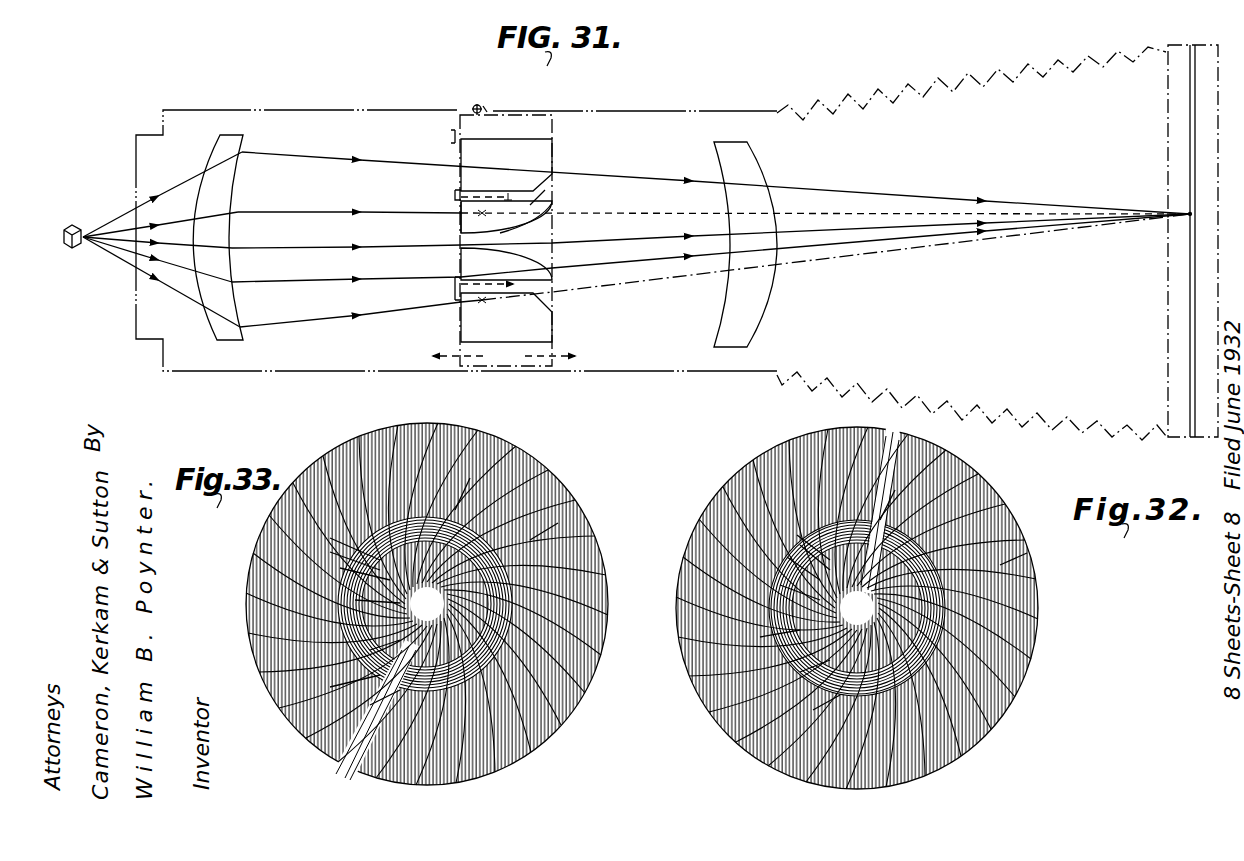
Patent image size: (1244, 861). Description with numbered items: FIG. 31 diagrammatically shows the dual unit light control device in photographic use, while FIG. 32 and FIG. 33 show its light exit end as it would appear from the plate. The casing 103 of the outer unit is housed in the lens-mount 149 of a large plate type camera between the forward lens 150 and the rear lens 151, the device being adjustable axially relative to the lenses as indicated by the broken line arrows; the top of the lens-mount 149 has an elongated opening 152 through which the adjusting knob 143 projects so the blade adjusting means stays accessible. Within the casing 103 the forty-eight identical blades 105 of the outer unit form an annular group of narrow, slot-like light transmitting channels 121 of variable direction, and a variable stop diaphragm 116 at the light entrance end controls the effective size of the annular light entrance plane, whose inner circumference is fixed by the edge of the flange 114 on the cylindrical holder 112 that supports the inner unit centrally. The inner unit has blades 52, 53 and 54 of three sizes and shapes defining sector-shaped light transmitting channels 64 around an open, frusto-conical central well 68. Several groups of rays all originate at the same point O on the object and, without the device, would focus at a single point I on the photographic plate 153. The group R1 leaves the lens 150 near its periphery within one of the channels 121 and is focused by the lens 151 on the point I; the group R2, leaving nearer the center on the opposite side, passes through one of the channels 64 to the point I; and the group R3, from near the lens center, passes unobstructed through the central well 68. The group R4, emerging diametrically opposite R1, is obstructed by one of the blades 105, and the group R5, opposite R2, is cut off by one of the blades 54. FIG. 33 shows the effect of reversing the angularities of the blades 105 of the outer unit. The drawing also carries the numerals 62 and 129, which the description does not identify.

In FIG. 31, the lens-mount 149 is at (288, 102).
In FIG. 31, the forward lens 150 is at (222, 149).
In FIG. 31, the rear lens 151 is at (747, 163).
In FIG. 31, the photographic plate 153 is at (1190, 135).
In FIG. 31, the adjusting knob 143 is at (477, 103).
In FIG. 31, the elongated opening 152 is at (487, 110).
In FIG. 31, the casing 103 is at (525, 130).
In FIG. 31, the variable stop diaphragm 116 is at (433, 138).
In FIG. 31, the light controlling blades 105 is at (542, 156).
In FIG. 33, the light controlling blades 105 is at (540, 507).
In FIG. 32, the light controlling blades 105 is at (1007, 535).
In FIG. 31, the cylindrical holder 112 is at (511, 190).
In FIG. 31, the chamfered edge 129 is at (545, 190).
In FIG. 31, the flange 114 is at (455, 190).
In FIG. 33, the flange 114 is at (582, 640).
In FIG. 32, the flange 114 is at (1030, 622).
In FIG. 31, the prism edge 62 is at (461, 212).
In FIG. 31, the light controlling blade 54 is at (470, 226).
In FIG. 33, the light controlling blade 54 is at (330, 538).
In FIG. 32, the light controlling blade 54 is at (797, 535).
In FIG. 31, the central well 68 is at (503, 233).
In FIG. 33, the central well 68 is at (578, 543).
In FIG. 32, the central well 68 is at (917, 598).
In FIG. 33, the large blade 52 is at (330, 552).
In FIG. 32, the large blade 52 is at (800, 545).
In FIG. 33, the light controlling blade 53 is at (340, 568).
In FIG. 32, the light controlling blade 53 is at (787, 557).
In FIG. 33, the light transmitting channels 64 is at (330, 686).
In FIG. 32, the light transmitting channels 64 is at (800, 672).
In FIG. 33, the light transmitting channels 121 is at (362, 750).
In FIG. 32, the light transmitting channels 121 is at (885, 447).
In FIG. 31, the point on the object O is at (82, 246).
In FIG. 31, the point on the plate I is at (1185, 212).
In FIG. 31, the group of rays R1 is at (310, 155).
In FIG. 33, the group of rays R1 is at (470, 478).
In FIG. 32, the group of rays R1 is at (895, 490).
In FIG. 31, the group of rays R2 is at (315, 283).
In FIG. 33, the group of rays R2 is at (370, 650).
In FIG. 32, the group of rays R2 is at (760, 637).
In FIG. 31, the group of rays R3 is at (283, 249).
In FIG. 33, the group of rays R3 is at (355, 600).
In FIG. 32, the group of rays R3 is at (780, 585).
In FIG. 31, the group of rays R4 is at (307, 321).
In FIG. 33, the group of rays R4 is at (370, 705).
In FIG. 32, the group of rays R4 is at (813, 710).
In FIG. 31, the group of rays R5 is at (287, 211).
In FIG. 33, the group of rays R5 is at (558, 523).
In FIG. 32, the group of rays R5 is at (1027, 553).